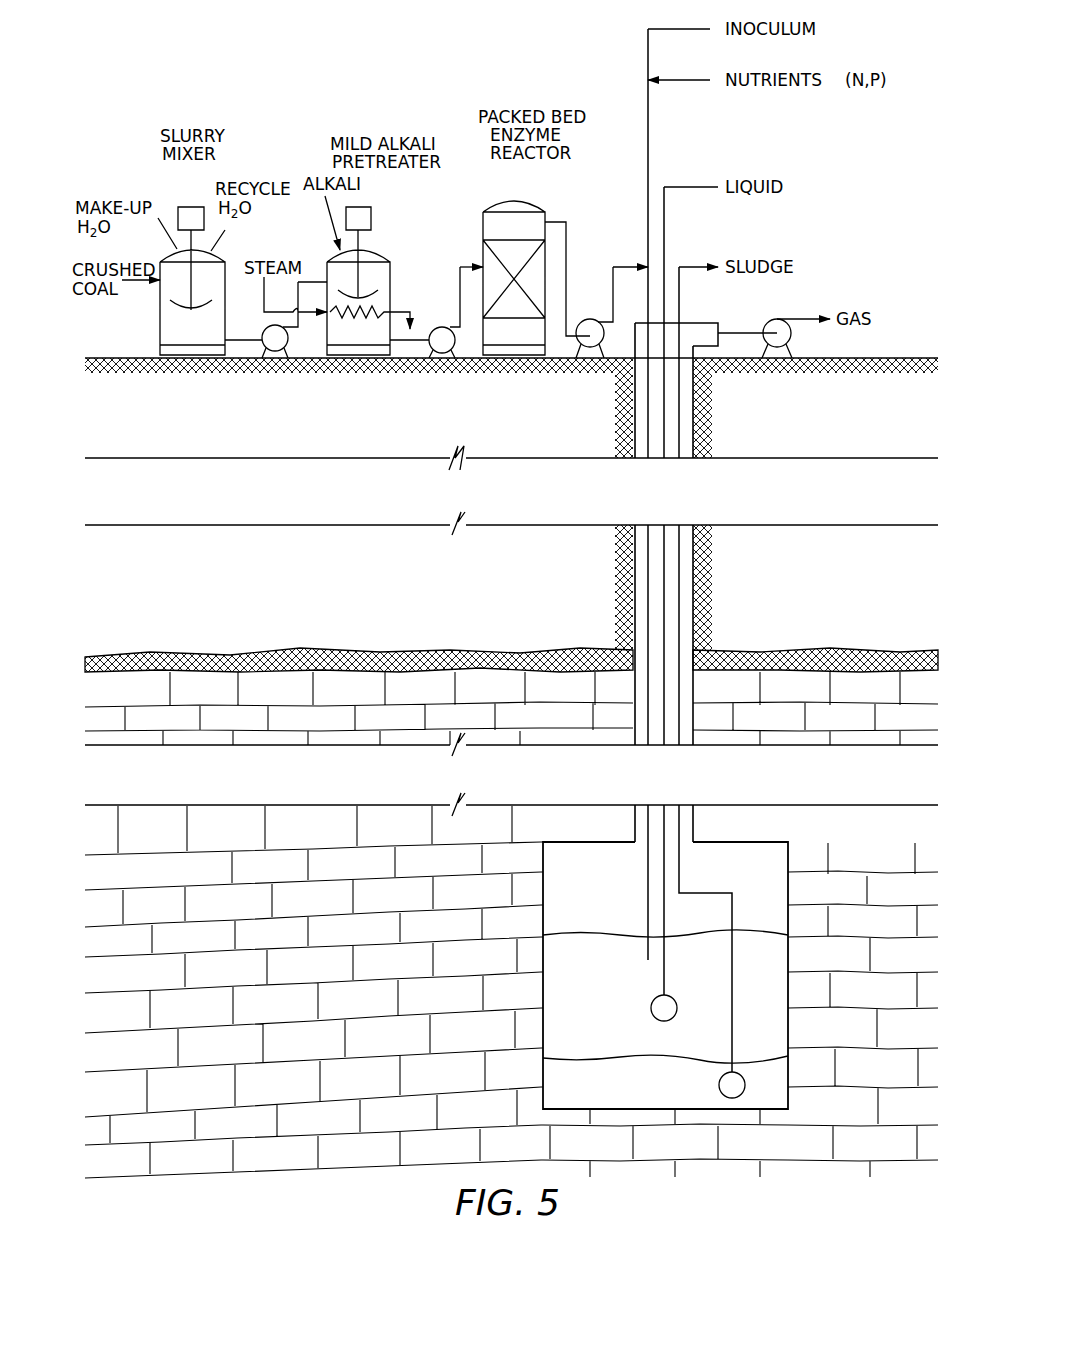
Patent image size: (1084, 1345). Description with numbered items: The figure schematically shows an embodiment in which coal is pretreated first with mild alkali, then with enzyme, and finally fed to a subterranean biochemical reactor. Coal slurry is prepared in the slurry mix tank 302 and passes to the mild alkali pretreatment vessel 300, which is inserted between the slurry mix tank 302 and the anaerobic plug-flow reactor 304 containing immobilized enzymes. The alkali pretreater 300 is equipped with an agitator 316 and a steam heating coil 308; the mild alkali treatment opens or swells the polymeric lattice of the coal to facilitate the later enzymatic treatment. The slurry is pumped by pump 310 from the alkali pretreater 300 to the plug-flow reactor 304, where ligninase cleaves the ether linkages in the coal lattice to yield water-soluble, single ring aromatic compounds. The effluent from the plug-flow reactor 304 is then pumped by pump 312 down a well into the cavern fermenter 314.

The mild alkali pretreatment vessel 300 is at (383, 281).
The slurry mix tank 302 is at (226, 260).
The anaerobic plug-flow reactor 304 is at (532, 206).
The steam heating coil 308 is at (376, 310).
The pump 310 is at (445, 350).
The pump 312 is at (585, 321).
The cavern fermenter 314 is at (585, 903).
The agitator 316 is at (360, 285).